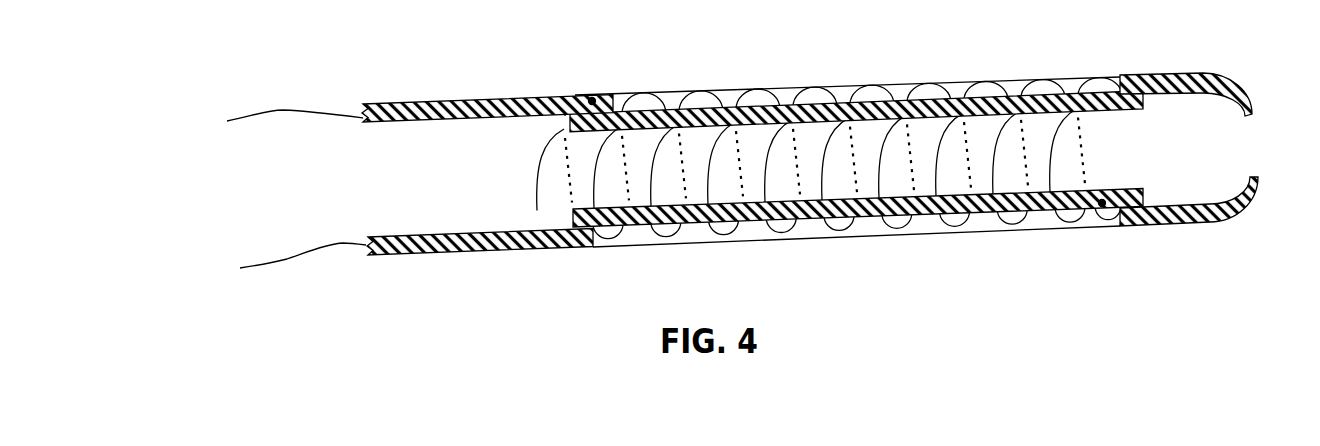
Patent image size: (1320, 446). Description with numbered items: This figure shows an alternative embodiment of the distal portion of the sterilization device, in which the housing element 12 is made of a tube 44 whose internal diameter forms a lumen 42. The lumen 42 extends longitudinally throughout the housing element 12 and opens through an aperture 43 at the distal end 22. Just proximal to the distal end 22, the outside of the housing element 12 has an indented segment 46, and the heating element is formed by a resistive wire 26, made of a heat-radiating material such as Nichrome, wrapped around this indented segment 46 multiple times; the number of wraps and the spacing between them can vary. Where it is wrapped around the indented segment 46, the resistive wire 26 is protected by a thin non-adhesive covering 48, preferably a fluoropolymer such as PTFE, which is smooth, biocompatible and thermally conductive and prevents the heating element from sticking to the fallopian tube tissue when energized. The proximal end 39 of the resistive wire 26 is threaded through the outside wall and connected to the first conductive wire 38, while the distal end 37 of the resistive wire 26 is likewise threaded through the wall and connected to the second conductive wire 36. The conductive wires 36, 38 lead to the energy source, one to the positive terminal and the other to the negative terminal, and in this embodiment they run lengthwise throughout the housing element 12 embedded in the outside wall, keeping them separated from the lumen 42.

The housing element 12 is at (486, 78).
The distal end 22 is at (1205, 126).
The resistive wire 26 is at (856, 84).
The second conductive wire 36 is at (301, 286).
The distal end of resistive wire 37 is at (1128, 240).
The first conductive wire 38 is at (295, 87).
The proximal end of resistive wire 39 is at (564, 72).
The lumen 42 is at (480, 259).
The aperture 43 is at (1277, 142).
The tube 44 is at (1186, 65).
The indented segment 46 is at (829, 132).
The non-adhesive covering 48 is at (858, 238).